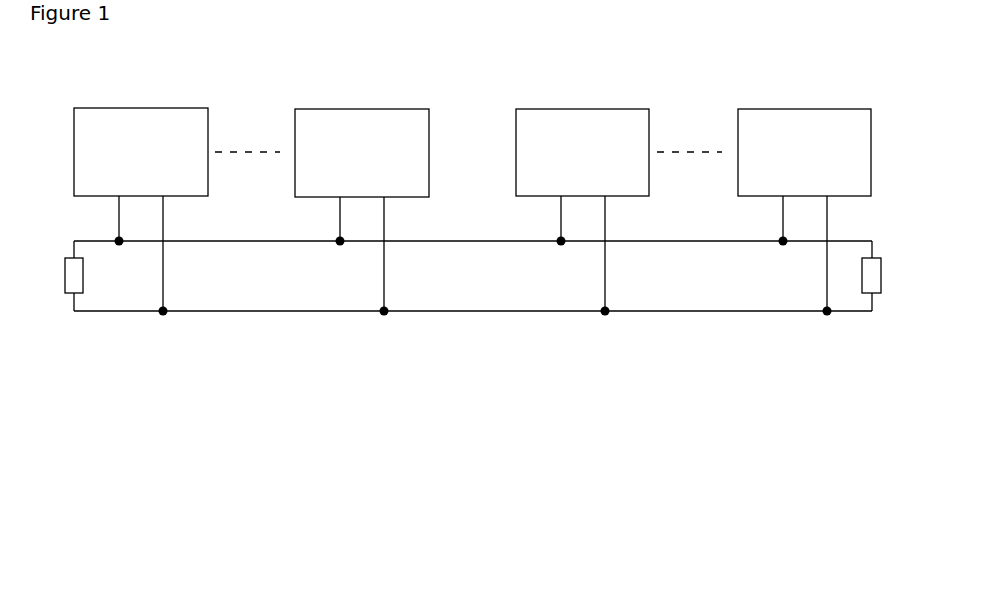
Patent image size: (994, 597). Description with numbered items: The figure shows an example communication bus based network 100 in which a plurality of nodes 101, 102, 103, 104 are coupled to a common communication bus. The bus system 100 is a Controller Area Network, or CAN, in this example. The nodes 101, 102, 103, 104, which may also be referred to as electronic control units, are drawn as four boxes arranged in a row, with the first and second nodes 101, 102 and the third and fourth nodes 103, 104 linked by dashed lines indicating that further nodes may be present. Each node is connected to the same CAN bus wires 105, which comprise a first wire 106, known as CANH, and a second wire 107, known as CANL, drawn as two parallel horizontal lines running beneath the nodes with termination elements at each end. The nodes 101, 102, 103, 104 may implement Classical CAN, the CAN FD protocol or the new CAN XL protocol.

The communication bus based network 100 is at (289, 67).
The node 101 is at (163, 164).
The node 102 is at (384, 164).
The node 103 is at (604, 164).
The node 104 is at (826, 164).
The CAN bus wires 105 is at (289, 355).
The first wire 106 is at (457, 312).
The second wire 107 is at (492, 242).